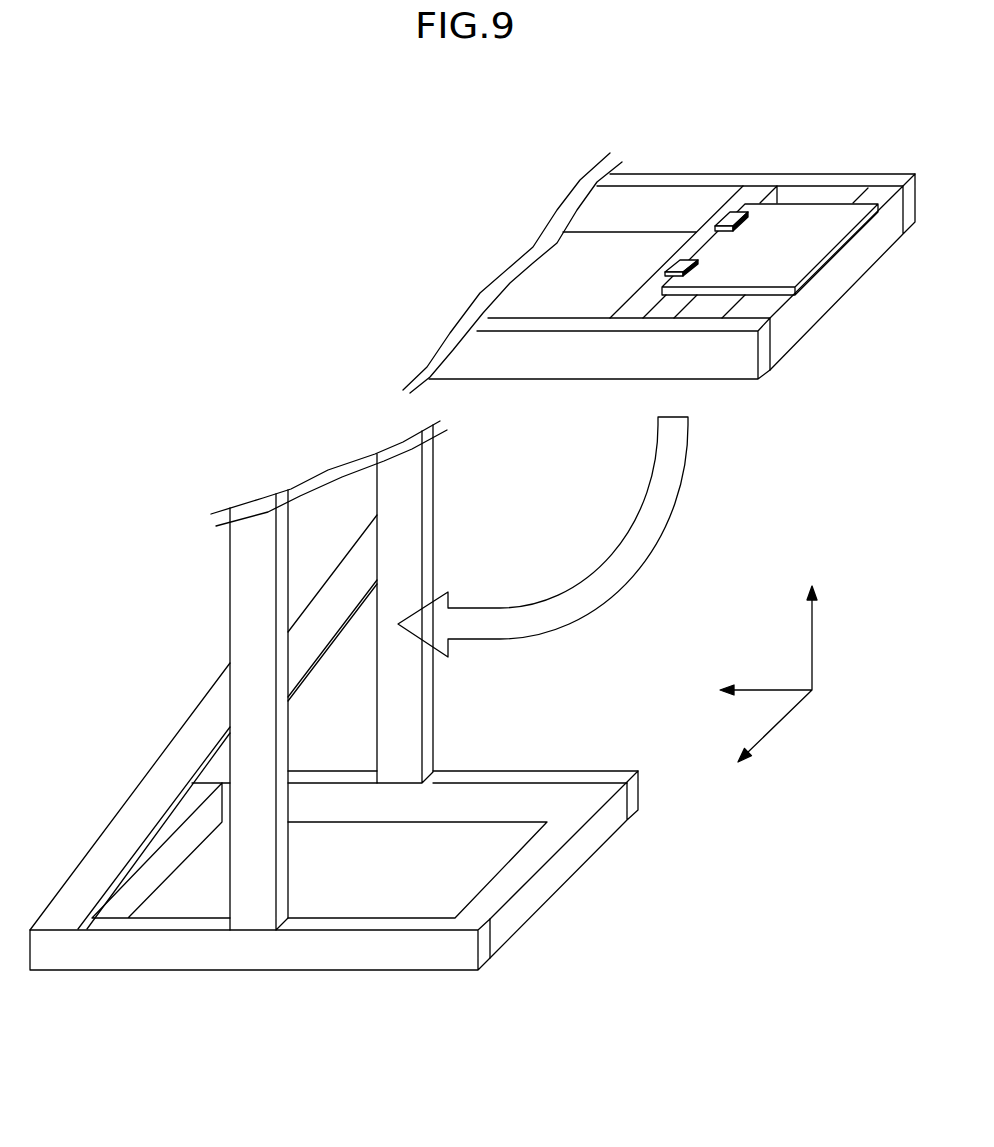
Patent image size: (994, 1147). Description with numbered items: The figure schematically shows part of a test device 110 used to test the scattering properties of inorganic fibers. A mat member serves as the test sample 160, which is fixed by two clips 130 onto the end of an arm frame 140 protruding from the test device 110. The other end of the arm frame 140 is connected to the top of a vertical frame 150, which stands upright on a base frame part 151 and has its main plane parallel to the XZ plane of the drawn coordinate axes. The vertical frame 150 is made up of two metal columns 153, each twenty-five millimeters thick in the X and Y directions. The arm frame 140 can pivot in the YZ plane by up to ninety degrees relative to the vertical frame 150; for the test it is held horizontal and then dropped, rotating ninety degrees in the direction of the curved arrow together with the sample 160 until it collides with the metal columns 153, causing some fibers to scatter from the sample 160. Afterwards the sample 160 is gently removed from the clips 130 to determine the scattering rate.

The test device 110 is at (243, 101).
The clips 130 is at (728, 213).
The arm frame 140 is at (663, 176).
The test sample 160 is at (802, 217).
The vertical frame 150 is at (205, 590).
The base frame part 151 is at (558, 868).
The metal columns 153 is at (236, 627).